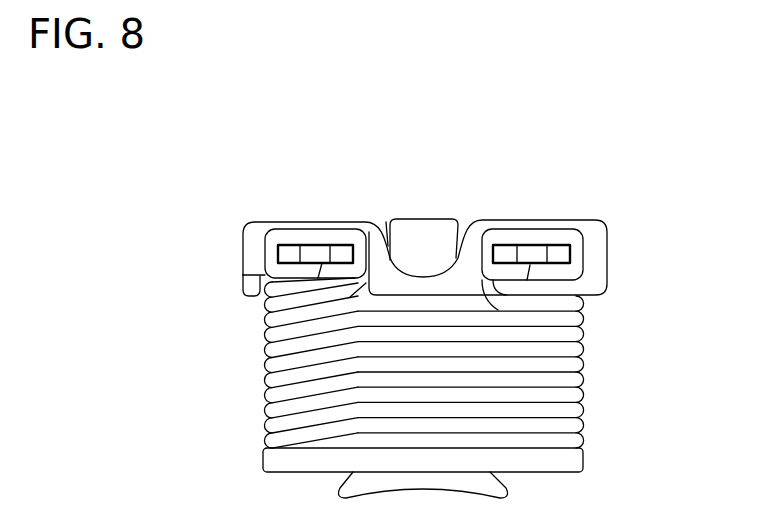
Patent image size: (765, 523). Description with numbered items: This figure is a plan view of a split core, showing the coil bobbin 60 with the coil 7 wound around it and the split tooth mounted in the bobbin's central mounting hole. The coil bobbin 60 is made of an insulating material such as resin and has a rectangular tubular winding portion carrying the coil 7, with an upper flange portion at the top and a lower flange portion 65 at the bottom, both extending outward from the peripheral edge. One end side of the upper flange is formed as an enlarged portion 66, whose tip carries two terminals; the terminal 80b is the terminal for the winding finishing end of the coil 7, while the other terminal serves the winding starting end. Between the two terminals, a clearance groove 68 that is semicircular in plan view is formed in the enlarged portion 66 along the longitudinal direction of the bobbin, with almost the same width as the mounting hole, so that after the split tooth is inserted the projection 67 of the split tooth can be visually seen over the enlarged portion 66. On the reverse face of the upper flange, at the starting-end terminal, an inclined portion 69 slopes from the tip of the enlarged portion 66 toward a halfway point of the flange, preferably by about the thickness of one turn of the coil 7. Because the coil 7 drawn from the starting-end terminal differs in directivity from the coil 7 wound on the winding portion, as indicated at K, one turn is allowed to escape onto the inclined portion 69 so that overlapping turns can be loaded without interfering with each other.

The coil bobbin 60 is at (642, 262).
The enlarged portion 66 is at (226, 210).
The projection 67 is at (432, 235).
The clearance groove 68 is at (392, 244).
The terminal of winding finishing end 80b is at (313, 253).
The inclined portion 69 is at (250, 295).
The coil 7 is at (585, 366).
The coil directivity difference K is at (356, 283).
The lower flange portion 65 is at (575, 460).